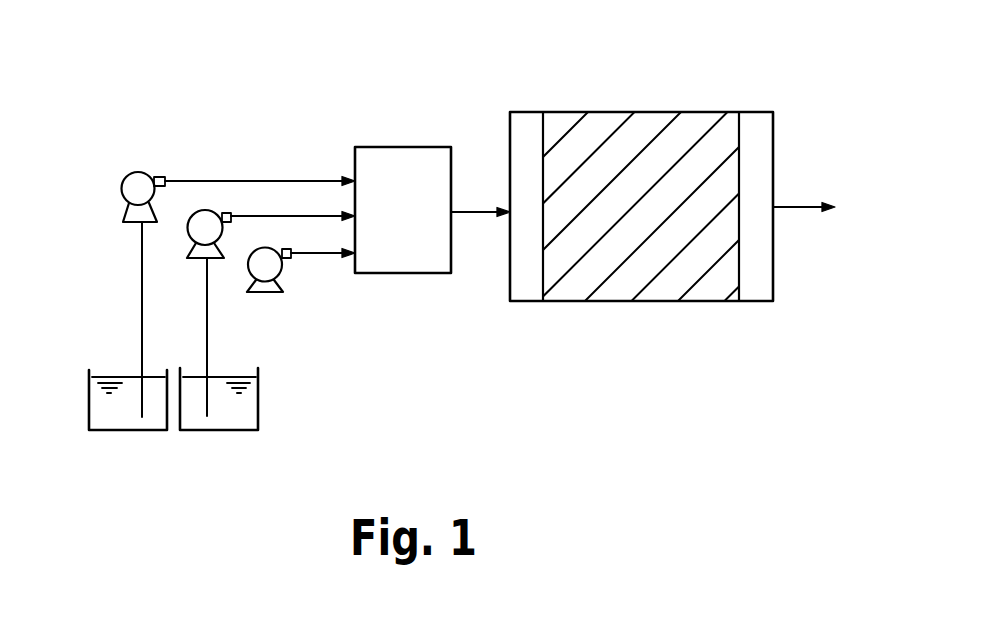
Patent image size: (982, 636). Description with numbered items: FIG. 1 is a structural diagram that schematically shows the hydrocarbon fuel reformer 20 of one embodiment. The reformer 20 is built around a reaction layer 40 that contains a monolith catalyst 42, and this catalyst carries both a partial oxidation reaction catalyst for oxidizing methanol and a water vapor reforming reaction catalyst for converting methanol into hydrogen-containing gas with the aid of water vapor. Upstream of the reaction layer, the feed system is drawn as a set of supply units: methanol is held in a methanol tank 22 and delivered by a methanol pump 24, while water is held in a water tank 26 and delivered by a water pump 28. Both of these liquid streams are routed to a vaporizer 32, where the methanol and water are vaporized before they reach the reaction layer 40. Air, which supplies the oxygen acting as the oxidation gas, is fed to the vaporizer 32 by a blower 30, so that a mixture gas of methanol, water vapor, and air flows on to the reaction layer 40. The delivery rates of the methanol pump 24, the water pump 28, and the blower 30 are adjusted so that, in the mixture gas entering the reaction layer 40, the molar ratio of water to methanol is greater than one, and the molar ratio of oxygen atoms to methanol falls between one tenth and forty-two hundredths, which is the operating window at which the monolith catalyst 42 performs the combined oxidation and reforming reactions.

The hydrocarbon fuel reformer 20 is at (693, 84).
The methanol tank 22 is at (123, 431).
The methanol pump 24 is at (150, 173).
The water tank 26 is at (240, 431).
The water pump 28 is at (190, 239).
The blower 30 is at (270, 293).
The vaporizer 32 is at (396, 147).
The reaction layer 40 is at (748, 111).
The monolith catalyst 42 is at (579, 283).